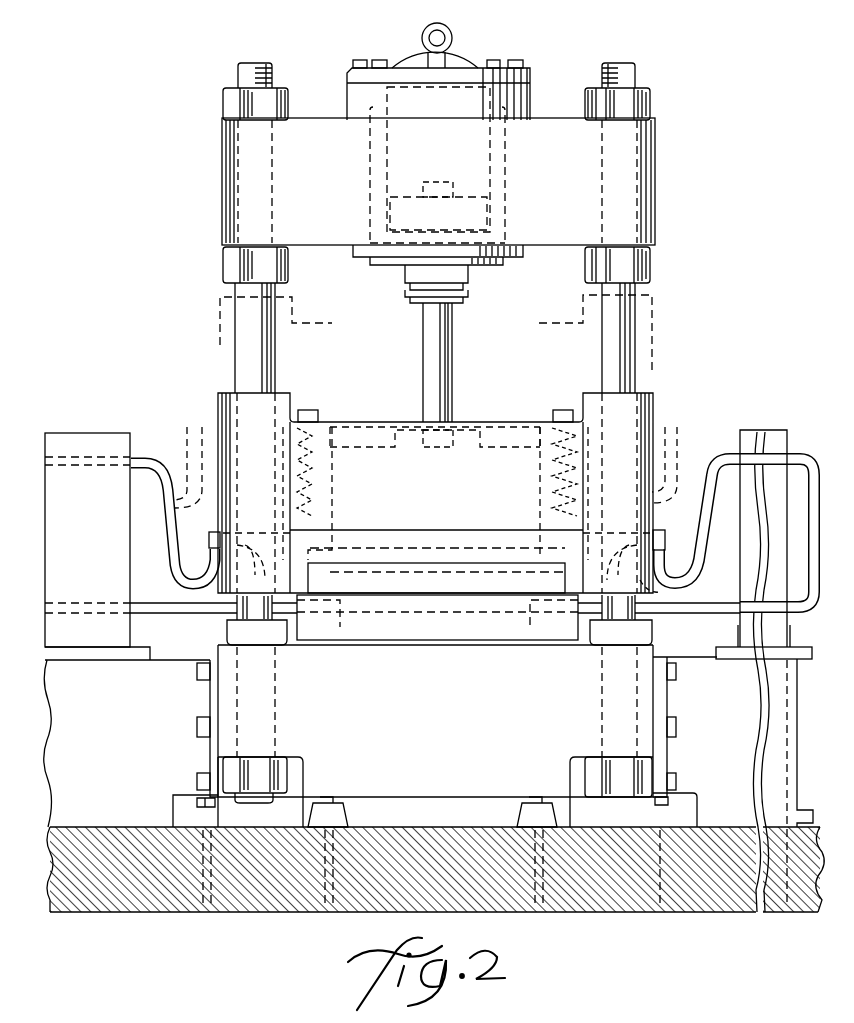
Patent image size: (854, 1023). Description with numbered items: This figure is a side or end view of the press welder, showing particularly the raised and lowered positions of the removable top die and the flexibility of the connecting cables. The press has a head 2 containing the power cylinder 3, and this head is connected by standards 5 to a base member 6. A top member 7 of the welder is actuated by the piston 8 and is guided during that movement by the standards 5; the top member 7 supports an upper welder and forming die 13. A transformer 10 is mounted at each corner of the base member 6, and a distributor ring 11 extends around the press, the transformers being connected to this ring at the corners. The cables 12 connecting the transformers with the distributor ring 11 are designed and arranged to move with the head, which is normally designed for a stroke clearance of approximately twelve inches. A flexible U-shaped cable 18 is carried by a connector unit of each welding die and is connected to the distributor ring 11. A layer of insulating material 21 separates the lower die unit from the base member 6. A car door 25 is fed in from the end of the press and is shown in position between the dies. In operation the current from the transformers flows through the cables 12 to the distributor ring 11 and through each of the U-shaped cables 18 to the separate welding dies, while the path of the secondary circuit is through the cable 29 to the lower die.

The head 2 is at (557, 178).
The power cylinder 3 is at (517, 93).
The standards 5 is at (250, 342).
The base member 6 is at (445, 711).
The top member 7 is at (633, 428).
The piston 8 is at (440, 370).
The transformer 10 is at (797, 412).
The distributor ring 11 is at (210, 542).
The cables 12 is at (158, 461).
The upper welder and forming die 13 is at (527, 423).
The flexible cable 18 is at (657, 590).
The insulating material 21 is at (422, 640).
The door 25 is at (390, 593).
The cable 29 is at (177, 613).